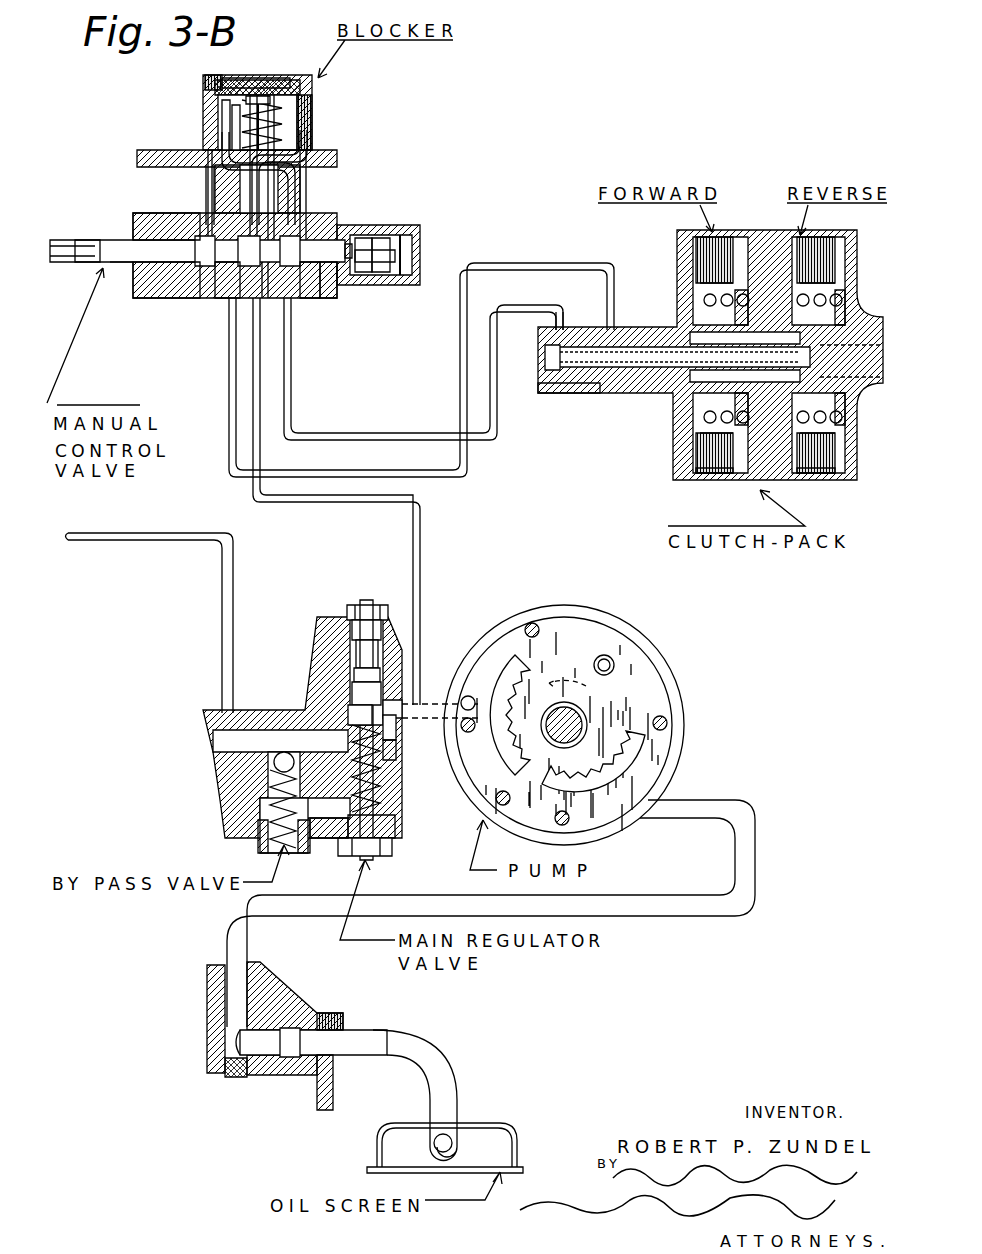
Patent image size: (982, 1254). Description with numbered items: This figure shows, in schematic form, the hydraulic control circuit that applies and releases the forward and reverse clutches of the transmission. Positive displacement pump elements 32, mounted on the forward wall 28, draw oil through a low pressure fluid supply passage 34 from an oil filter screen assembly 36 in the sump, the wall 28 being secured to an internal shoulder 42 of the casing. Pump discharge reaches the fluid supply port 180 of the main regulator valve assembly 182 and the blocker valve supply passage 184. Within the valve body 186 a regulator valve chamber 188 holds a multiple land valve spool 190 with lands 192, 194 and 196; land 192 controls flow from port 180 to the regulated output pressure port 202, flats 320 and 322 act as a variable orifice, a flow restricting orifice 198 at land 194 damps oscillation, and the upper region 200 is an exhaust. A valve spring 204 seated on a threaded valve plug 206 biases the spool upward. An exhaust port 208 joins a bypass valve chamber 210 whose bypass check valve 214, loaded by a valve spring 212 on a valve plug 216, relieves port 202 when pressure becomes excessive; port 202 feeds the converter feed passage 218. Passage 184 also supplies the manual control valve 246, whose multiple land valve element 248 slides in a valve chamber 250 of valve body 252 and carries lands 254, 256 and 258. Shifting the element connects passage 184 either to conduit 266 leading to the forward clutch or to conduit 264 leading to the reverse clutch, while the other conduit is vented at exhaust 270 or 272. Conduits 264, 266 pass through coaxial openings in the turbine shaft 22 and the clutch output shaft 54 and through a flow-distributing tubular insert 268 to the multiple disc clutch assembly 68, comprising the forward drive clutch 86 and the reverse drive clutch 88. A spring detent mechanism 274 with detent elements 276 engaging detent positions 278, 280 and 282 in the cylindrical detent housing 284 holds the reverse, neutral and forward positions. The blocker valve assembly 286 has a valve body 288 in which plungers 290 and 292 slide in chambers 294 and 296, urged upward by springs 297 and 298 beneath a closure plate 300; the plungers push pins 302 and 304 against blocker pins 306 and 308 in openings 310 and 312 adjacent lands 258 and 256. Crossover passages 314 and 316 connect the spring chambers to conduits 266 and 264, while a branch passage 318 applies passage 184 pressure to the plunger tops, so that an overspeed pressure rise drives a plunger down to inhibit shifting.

The turbine shaft 22 is at (642, 388).
The forward wall 28 is at (207, 1018).
The positive displacement pump elements 32 is at (656, 742).
The low pressure fluid supply passage 34 is at (756, 862).
The oil filter screen assembly 36 is at (480, 1123).
The internal shoulder 42 is at (333, 1088).
The clutch output shaft 54 is at (860, 308).
The multiple disc clutch assembly 68 is at (747, 223).
The multiple disc forward drive clutch assembly 86 is at (715, 482).
The multiple disc reverse drive clutch assembly 88 is at (812, 482).
The fluid supply port 180 is at (385, 700).
The main regulator valve assembly 182 is at (360, 668).
The blocker valve supply passage 184 is at (262, 410).
The valve body 186 is at (318, 655).
The regulator valve chamber 188 is at (382, 775).
The multiple land valve spool 190 is at (398, 706).
The valve land 192 is at (385, 752).
The valve land 194 is at (356, 652).
The valve land 196 is at (385, 655).
The flow restricting orifice 198 is at (354, 686).
The upper region of regulator chamber 200 is at (350, 608).
The regulated output pressure port 202 is at (332, 726).
The valve spring 204 is at (385, 820).
The threaded valve plug 206 is at (392, 842).
The exhaust port 208 is at (330, 840).
The bypass valve chamber 210 is at (272, 766).
The valve spring 212 is at (268, 785).
The bypass check valve 214 is at (262, 752).
The valve plug 216 is at (257, 845).
The converter feed passage 218 is at (220, 668).
The manual control valve 246 is at (292, 380).
The multiple land valve element 248 is at (192, 262).
The valve chamber 250 is at (160, 285).
The valve body 252 is at (150, 300).
The valve land 254 is at (136, 282).
The valve land 256 is at (258, 268).
The valve land 258 is at (290, 300).
The conduit 264 is at (545, 263).
The conduit 266 is at (556, 308).
The flow-distributing tubular insert 268 is at (612, 383).
The vent 270 is at (302, 275).
The vent 272 is at (205, 298).
The spring detent mechanism 274 is at (405, 238).
The spring loaded detent elements 276 is at (362, 238).
The first detent position 278 is at (370, 285).
The second detent position 280 is at (355, 280).
The third detent position 282 is at (420, 240).
The cylindrical detent housing 284 is at (385, 240).
The blocker valve assembly 286 is at (305, 117).
The valve body 288 is at (308, 100).
The blocker valve plunger 290 is at (290, 78).
The blocker valve plunger 292 is at (256, 80).
The cylindrical chamber 294 is at (262, 124).
The cylindrical chamber 296 is at (268, 136).
The valve spring 297 is at (222, 104).
The valve spring 298 is at (235, 118).
The closure plate 300 is at (243, 80).
The pin 302 is at (310, 152).
The pin 304 is at (210, 160).
The blocker pin 306 is at (305, 218).
The blocker pin 308 is at (140, 222).
The opening 310 is at (262, 195).
The opening 312 is at (255, 212).
The crossover passage 314 is at (232, 172).
The crossover passage 316 is at (300, 160).
The branch passage 318 is at (208, 180).
The flat 320 is at (348, 720).
The flat 322 is at (398, 725).